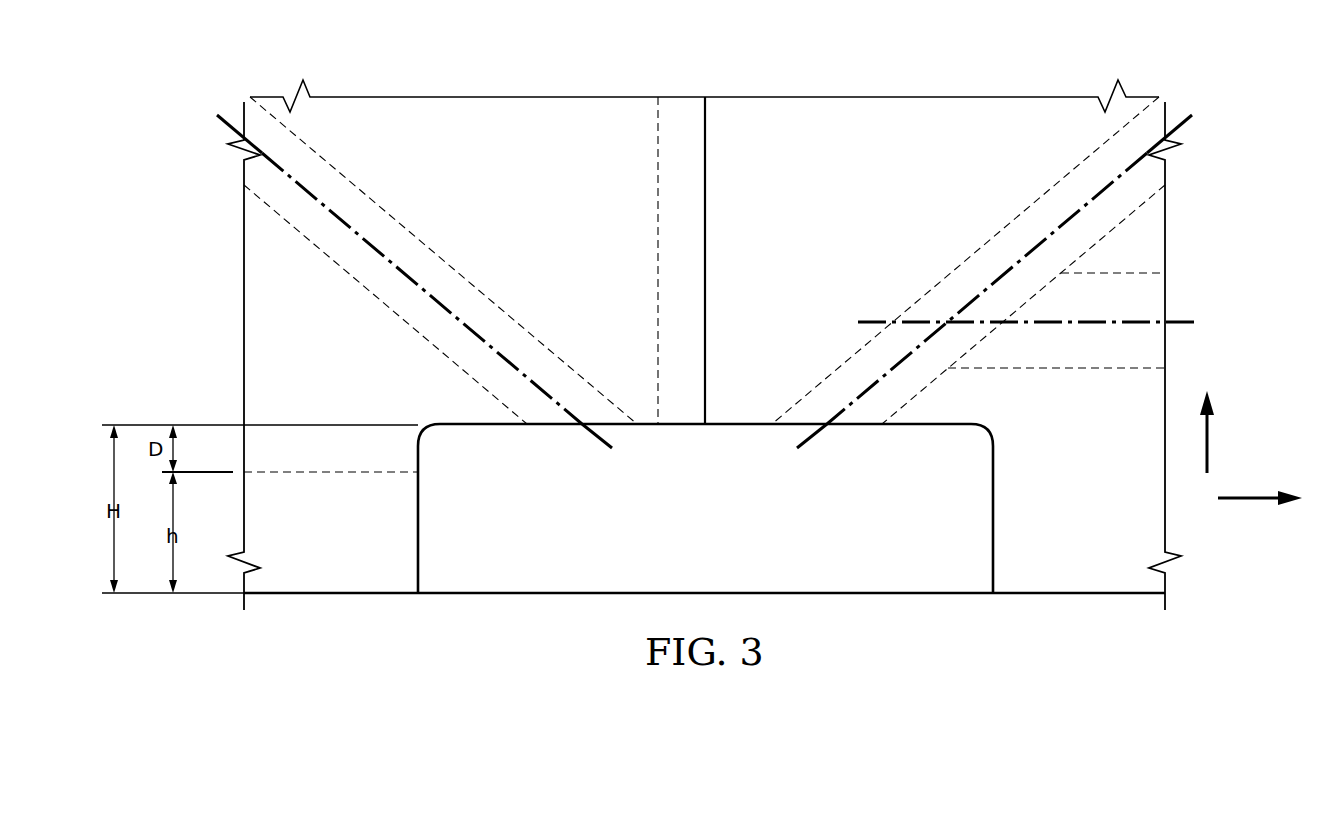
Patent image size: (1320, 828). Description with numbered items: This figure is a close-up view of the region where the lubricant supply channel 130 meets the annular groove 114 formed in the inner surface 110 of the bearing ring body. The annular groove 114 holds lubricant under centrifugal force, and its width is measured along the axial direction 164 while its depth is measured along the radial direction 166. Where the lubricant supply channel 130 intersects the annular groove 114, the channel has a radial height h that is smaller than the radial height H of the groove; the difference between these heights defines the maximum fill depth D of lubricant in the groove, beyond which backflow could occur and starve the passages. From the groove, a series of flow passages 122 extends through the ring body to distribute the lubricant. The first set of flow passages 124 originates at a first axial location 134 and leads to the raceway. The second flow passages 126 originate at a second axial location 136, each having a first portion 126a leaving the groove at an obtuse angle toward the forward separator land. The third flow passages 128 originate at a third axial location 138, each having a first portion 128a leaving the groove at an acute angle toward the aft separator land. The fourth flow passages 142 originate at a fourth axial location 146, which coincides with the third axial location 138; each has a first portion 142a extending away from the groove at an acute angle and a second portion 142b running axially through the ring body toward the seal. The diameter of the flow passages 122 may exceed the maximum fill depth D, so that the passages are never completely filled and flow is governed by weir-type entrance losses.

The inner surface 110 is at (1092, 595).
The annular groove 114 is at (901, 582).
The flow passages 122 is at (757, 282).
The first set of flow passages 124 is at (705, 160).
The second flow passages 126 is at (427, 291).
The first portion of second flow passage 126a is at (493, 262).
The third flow passages 128 is at (1035, 291).
The first portion of third flow passage 128a is at (937, 285).
The lubricant supply channel 130 is at (333, 475).
The first axial location 134 is at (680, 428).
The second axial location 136 is at (553, 428).
The third axial location 138 is at (994, 300).
The fourth flow passages 142 is at (1060, 347).
The first portion of fourth flow passage 142a is at (937, 375).
The second portion of fourth flow passage 142b is at (1150, 262).
The fourth axial location 146 is at (858, 428).
The axial direction 164 is at (1250, 500).
The radial direction 166 is at (1207, 452).